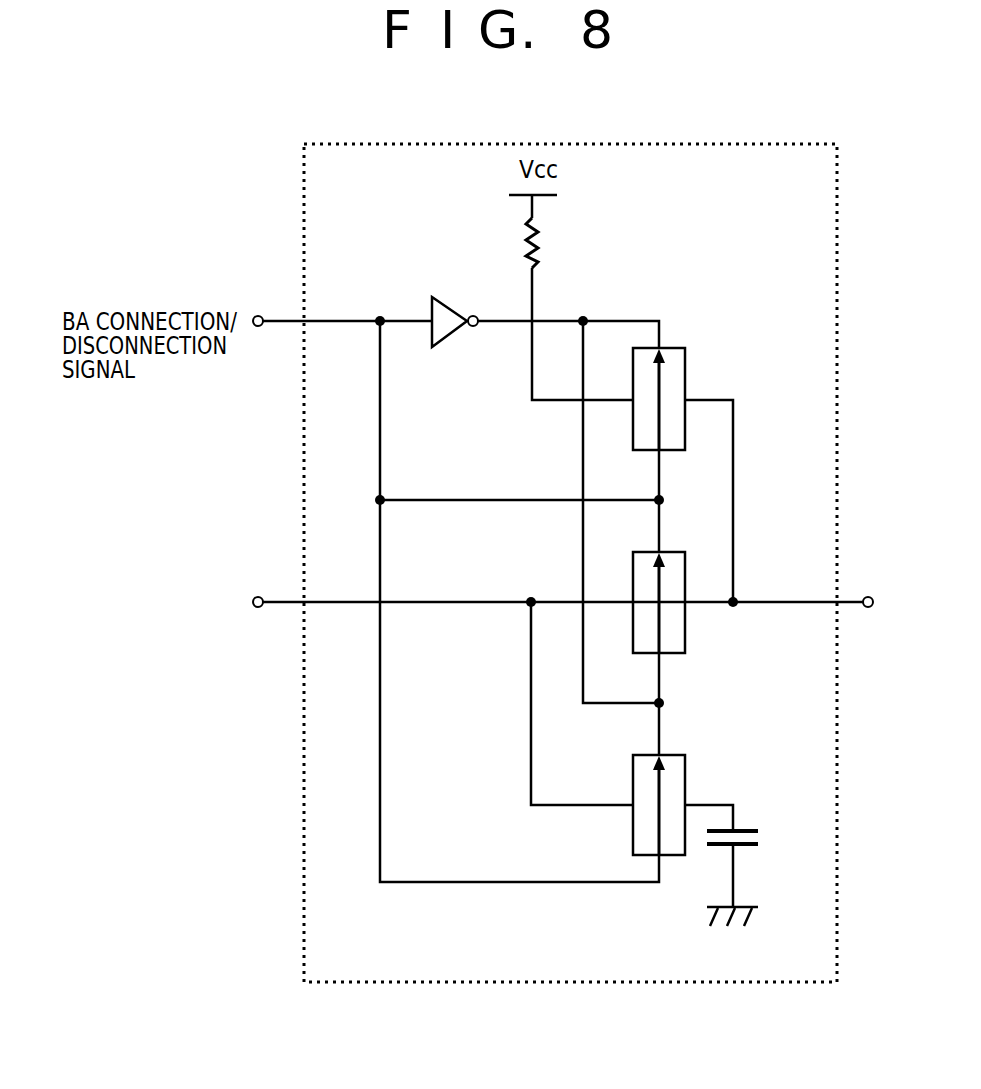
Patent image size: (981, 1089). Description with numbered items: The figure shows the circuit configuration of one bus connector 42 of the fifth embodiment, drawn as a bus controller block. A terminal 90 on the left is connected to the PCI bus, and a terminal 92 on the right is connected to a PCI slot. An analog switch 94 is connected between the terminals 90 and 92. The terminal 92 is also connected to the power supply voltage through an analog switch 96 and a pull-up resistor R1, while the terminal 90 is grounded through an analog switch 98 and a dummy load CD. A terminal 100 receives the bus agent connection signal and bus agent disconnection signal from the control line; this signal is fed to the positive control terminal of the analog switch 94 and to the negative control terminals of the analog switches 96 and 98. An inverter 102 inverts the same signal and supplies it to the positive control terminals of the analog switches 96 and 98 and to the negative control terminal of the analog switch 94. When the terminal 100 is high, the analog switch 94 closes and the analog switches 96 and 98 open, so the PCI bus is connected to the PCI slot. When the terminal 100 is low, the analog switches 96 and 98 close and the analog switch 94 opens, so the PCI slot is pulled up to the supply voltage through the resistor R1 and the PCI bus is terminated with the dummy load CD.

The bus connector 42 is at (578, 137).
The terminal 90 is at (262, 596).
The terminal 92 is at (870, 596).
The analog switch 94 is at (672, 548).
The analog switch 96 is at (672, 344).
The analog switch 98 is at (672, 752).
The terminal 100 is at (262, 314).
The inverter 102 is at (448, 306).
The pull-up resistor R1 is at (510, 243).
The dummy load CD is at (751, 874).